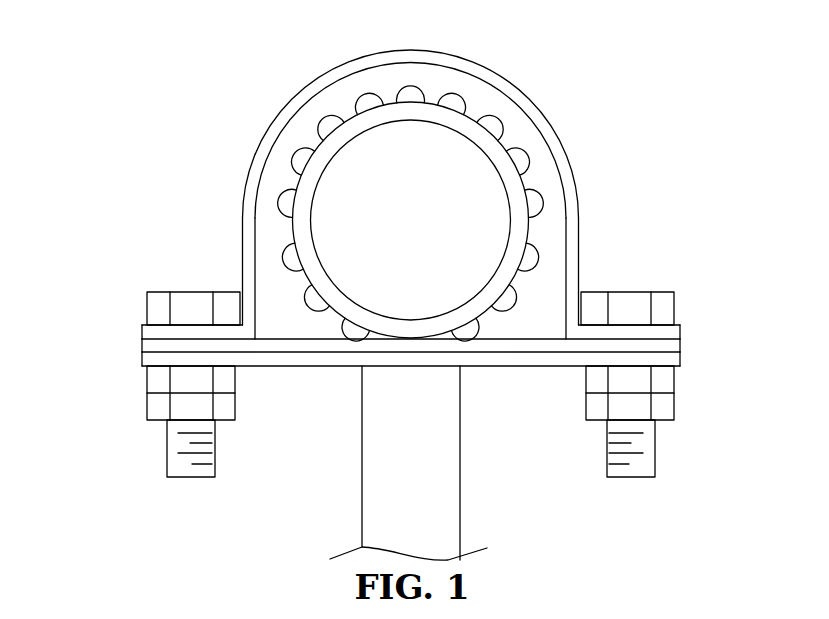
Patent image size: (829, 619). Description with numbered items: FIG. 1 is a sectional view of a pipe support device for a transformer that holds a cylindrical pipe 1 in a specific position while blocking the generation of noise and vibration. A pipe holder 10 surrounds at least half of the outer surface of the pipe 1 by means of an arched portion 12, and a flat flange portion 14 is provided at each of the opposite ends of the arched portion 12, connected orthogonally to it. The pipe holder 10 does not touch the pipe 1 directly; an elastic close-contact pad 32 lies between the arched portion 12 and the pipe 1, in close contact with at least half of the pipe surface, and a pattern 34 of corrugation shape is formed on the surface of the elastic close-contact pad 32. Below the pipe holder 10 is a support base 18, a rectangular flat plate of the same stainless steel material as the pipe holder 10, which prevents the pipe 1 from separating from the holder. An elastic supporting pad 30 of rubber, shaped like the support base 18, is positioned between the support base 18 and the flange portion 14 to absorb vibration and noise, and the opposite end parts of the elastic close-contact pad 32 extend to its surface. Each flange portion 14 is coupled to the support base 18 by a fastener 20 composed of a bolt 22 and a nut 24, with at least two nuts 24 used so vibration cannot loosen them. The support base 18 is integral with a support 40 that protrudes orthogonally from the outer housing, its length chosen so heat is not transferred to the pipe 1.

The pipe 1 is at (364, 183).
The pipe holder 10 is at (411, 194).
The arched portion 12 is at (565, 139).
The flange portion 14 is at (192, 330).
The support base 18 is at (512, 362).
The fastener 20 is at (410, 355).
The bolt 22 is at (153, 312).
The nut 24 is at (150, 410).
The elastic supporting pad 30 is at (312, 343).
The elastic close-contact pad 32 is at (297, 130).
The pattern 34 is at (514, 115).
The support 40 is at (447, 517).